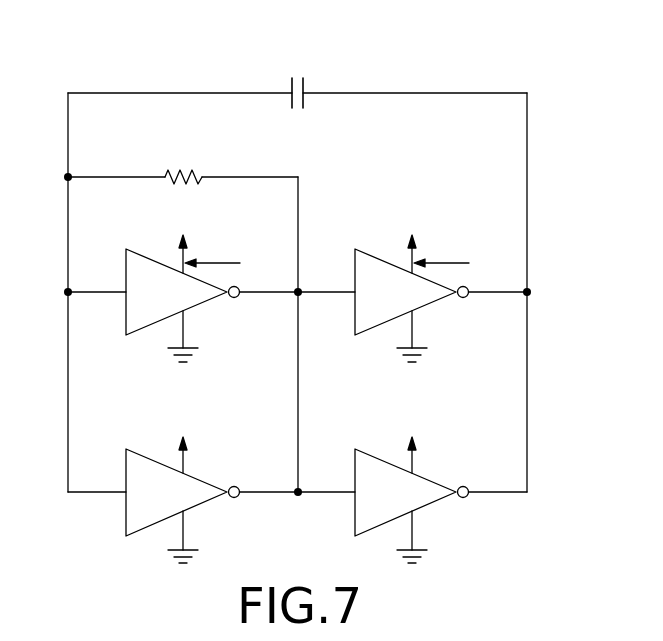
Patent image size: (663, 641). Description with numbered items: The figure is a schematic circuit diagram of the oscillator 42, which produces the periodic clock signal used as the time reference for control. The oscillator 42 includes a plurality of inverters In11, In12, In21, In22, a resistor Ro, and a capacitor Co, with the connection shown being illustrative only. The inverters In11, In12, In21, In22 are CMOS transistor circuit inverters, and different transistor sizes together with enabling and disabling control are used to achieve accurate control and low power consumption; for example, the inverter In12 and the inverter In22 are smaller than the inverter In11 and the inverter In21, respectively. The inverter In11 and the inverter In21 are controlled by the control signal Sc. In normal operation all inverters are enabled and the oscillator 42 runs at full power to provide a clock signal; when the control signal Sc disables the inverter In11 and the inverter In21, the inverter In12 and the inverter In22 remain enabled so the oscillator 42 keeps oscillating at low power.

The oscillator 42 is at (283, 21).
The capacitor Co is at (297, 77).
The resistor Ro is at (183, 162).
The inverter In11 is at (133, 275).
The inverter In12 is at (133, 475).
The inverter In21 is at (362, 275).
The inverter In22 is at (362, 475).